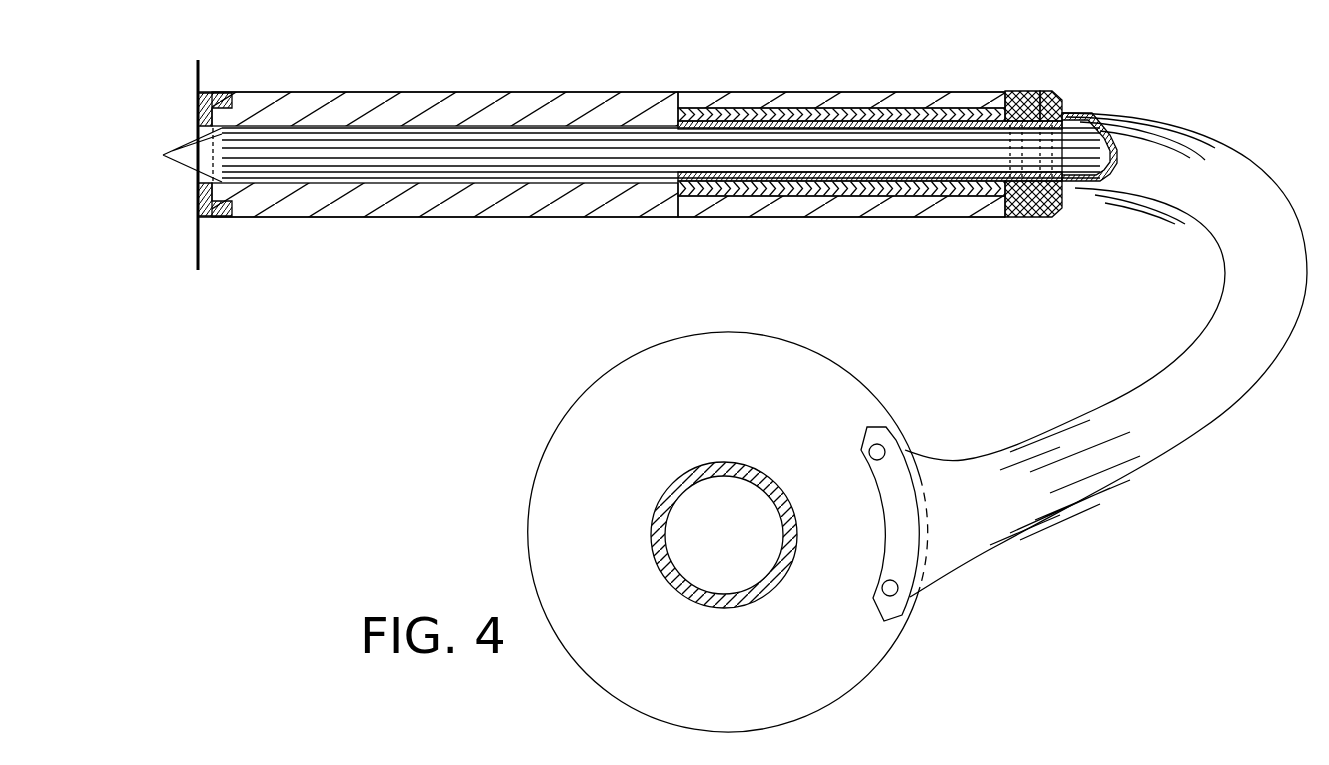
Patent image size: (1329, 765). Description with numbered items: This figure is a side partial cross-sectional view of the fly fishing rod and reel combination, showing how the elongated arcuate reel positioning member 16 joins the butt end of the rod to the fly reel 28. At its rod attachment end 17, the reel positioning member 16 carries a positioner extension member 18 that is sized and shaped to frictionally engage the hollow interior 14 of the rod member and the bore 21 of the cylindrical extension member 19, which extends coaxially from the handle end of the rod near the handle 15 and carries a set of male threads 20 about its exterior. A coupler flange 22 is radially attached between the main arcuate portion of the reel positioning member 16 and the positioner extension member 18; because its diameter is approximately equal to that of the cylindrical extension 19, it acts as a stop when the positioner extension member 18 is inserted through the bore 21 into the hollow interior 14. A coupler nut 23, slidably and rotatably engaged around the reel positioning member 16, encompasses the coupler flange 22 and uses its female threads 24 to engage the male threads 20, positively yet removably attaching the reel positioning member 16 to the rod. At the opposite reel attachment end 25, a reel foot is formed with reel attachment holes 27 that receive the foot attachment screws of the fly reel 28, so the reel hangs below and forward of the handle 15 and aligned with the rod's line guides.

The hollow interior 14 is at (565, 147).
The handle 15 is at (540, 208).
The elongated arcuate reel positioning member 16 is at (1198, 145).
The rod attachment end 17 is at (1100, 187).
The positioner extension member 18 is at (717, 190).
The cylindrical extension member 19 is at (717, 112).
The male threads 20 is at (1003, 190).
The bore 21 is at (797, 113).
The coupler flange 22 is at (1058, 102).
The coupler nut 23 is at (1035, 205).
The female threads 24 is at (1030, 92).
The reel attachment end 25 is at (1040, 502).
The reel attachment holes 27 is at (900, 588).
The fly reel 28 is at (552, 477).